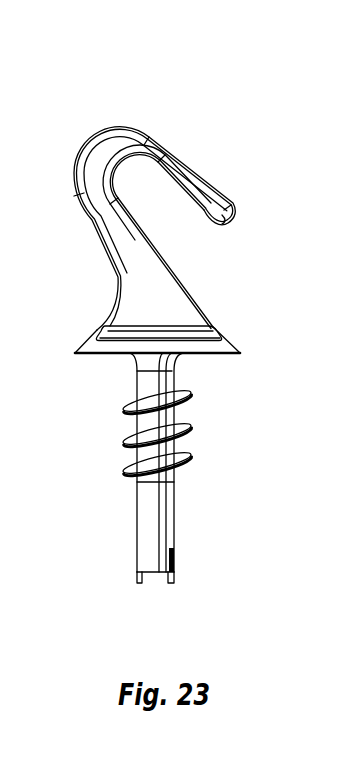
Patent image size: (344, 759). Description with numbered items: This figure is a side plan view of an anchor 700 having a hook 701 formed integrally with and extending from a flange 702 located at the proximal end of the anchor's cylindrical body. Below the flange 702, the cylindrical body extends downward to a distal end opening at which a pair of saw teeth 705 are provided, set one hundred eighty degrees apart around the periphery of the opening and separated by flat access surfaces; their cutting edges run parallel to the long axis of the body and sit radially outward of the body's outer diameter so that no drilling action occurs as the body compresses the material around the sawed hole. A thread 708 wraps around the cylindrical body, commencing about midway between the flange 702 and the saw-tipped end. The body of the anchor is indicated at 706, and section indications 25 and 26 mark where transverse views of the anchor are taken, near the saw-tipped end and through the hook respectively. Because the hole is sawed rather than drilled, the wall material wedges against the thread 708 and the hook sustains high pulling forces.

The anchor 700 is at (246, 416).
The hook 701 is at (163, 295).
The flange 702 is at (107, 350).
The saw teeth 705 is at (176, 576).
The shaft 706 is at (153, 572).
The thread 708 is at (183, 456).
The section line 25- 25 is at (232, 606).
The section line 26- 26 is at (233, 100).